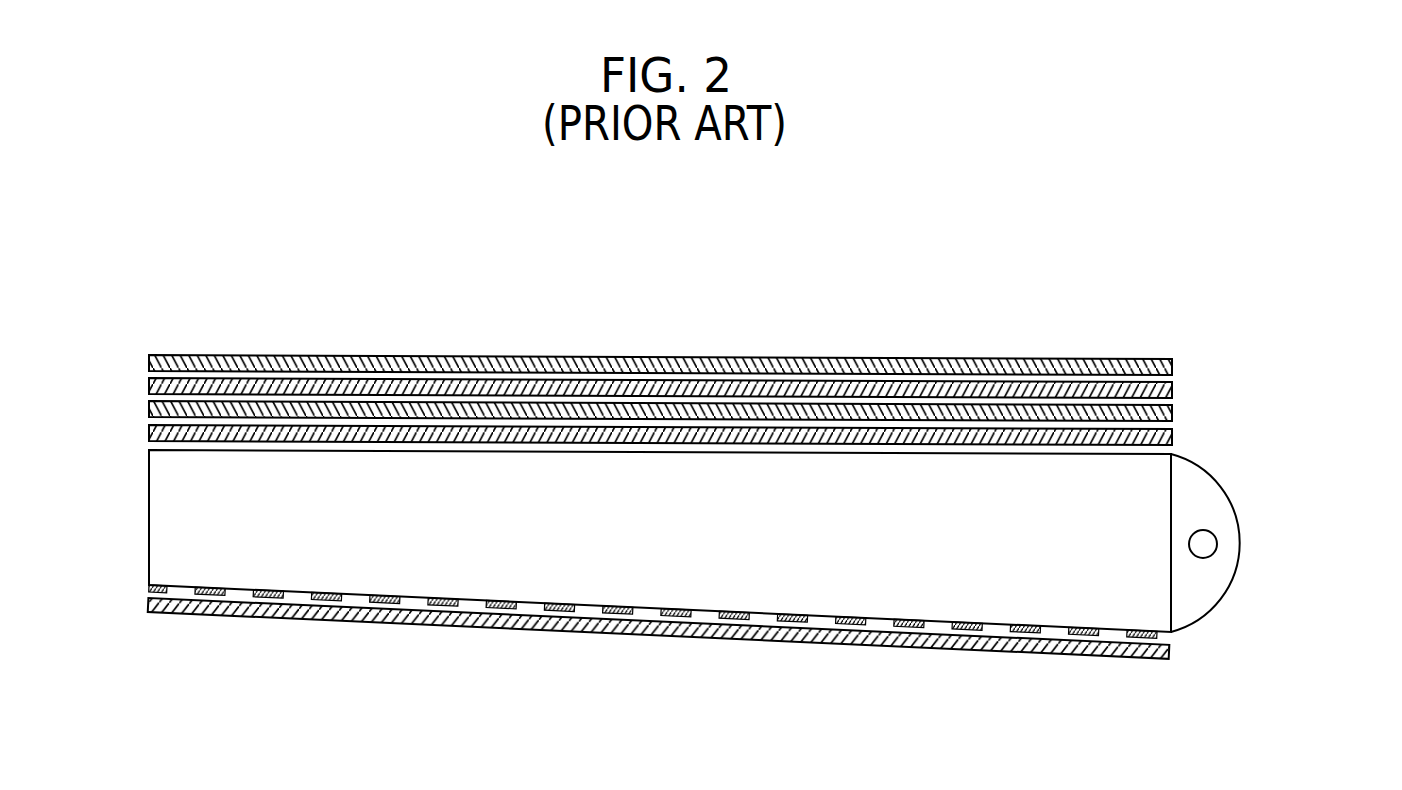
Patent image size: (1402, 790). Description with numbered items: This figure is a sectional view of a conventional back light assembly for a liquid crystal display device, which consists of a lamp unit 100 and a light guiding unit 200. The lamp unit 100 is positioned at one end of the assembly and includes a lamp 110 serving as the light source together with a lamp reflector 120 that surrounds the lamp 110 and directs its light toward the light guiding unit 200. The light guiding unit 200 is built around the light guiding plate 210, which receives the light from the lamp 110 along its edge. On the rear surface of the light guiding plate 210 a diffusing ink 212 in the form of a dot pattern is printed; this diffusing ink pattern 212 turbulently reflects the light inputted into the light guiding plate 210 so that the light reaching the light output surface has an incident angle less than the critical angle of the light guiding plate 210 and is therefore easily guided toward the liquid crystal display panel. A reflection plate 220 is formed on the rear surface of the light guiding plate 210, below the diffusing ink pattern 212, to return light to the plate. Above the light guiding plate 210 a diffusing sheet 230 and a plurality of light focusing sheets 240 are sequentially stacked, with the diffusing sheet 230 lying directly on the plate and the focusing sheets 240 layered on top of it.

The lamp unit 100 is at (1286, 638).
The lamp 110 is at (1212, 538).
The lamp reflector 120 is at (1238, 556).
The light guiding unit 200 is at (176, 645).
The light guiding plate 210 is at (162, 517).
The diffusing ink pattern 212 is at (912, 623).
The reflection plate 220 is at (1058, 657).
The diffusing sheet 230 is at (1172, 436).
The light focusing sheets 240 is at (1183, 358).